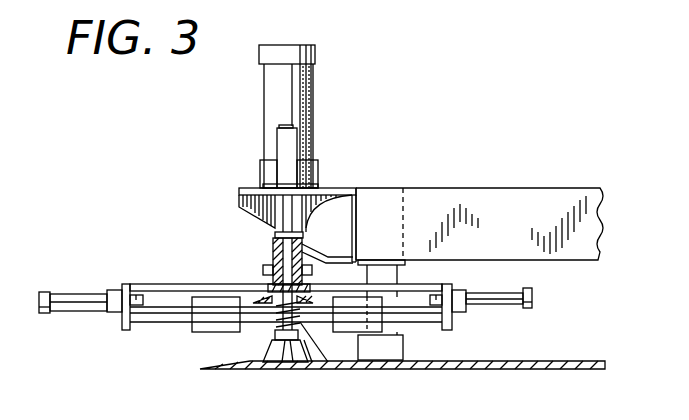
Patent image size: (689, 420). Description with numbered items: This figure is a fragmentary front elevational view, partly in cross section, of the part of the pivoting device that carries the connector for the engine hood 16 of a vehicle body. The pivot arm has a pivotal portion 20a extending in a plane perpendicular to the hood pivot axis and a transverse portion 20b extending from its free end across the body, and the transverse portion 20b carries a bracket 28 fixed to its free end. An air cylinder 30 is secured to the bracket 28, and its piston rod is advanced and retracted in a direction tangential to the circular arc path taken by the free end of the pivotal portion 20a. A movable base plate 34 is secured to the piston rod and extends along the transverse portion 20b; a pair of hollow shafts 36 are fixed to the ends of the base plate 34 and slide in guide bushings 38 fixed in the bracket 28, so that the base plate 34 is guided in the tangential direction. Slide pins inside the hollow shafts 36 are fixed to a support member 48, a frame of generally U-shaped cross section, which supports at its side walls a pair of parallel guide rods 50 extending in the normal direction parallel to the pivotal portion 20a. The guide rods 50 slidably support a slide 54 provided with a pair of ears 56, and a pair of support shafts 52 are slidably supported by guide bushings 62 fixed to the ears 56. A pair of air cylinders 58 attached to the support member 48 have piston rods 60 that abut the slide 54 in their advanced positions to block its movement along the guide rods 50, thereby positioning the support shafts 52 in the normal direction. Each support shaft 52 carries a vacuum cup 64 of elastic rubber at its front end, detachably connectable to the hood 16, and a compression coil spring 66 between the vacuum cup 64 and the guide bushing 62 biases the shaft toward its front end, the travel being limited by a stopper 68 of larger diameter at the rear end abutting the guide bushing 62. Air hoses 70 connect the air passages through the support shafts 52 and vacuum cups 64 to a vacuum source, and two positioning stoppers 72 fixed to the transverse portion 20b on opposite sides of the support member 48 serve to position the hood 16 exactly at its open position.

The engine hood 16 is at (547, 364).
The pivotal portion 20a is at (522, 200).
The transverse portion 20b is at (403, 188).
The bracket 28 is at (343, 190).
The air cylinder 30 is at (268, 88).
The movable base plate 34 is at (265, 268).
The hollow shafts 36 is at (280, 142).
The guide bushings 38 is at (277, 210).
The support member 48 is at (452, 318).
The guide rods 50 is at (418, 313).
The support shafts 52 is at (280, 260).
The slide 54 is at (200, 332).
The ears 56 is at (328, 364).
The air cylinders 58 is at (67, 295).
The piston rods 60 is at (136, 285).
The guide bushings 62 is at (274, 242).
The vacuum cup 64 is at (285, 352).
The compression coil spring 66 is at (272, 350).
The stopper 68 is at (303, 240).
The air hoses 70 is at (303, 217).
The positioning stoppers 72 is at (384, 350).